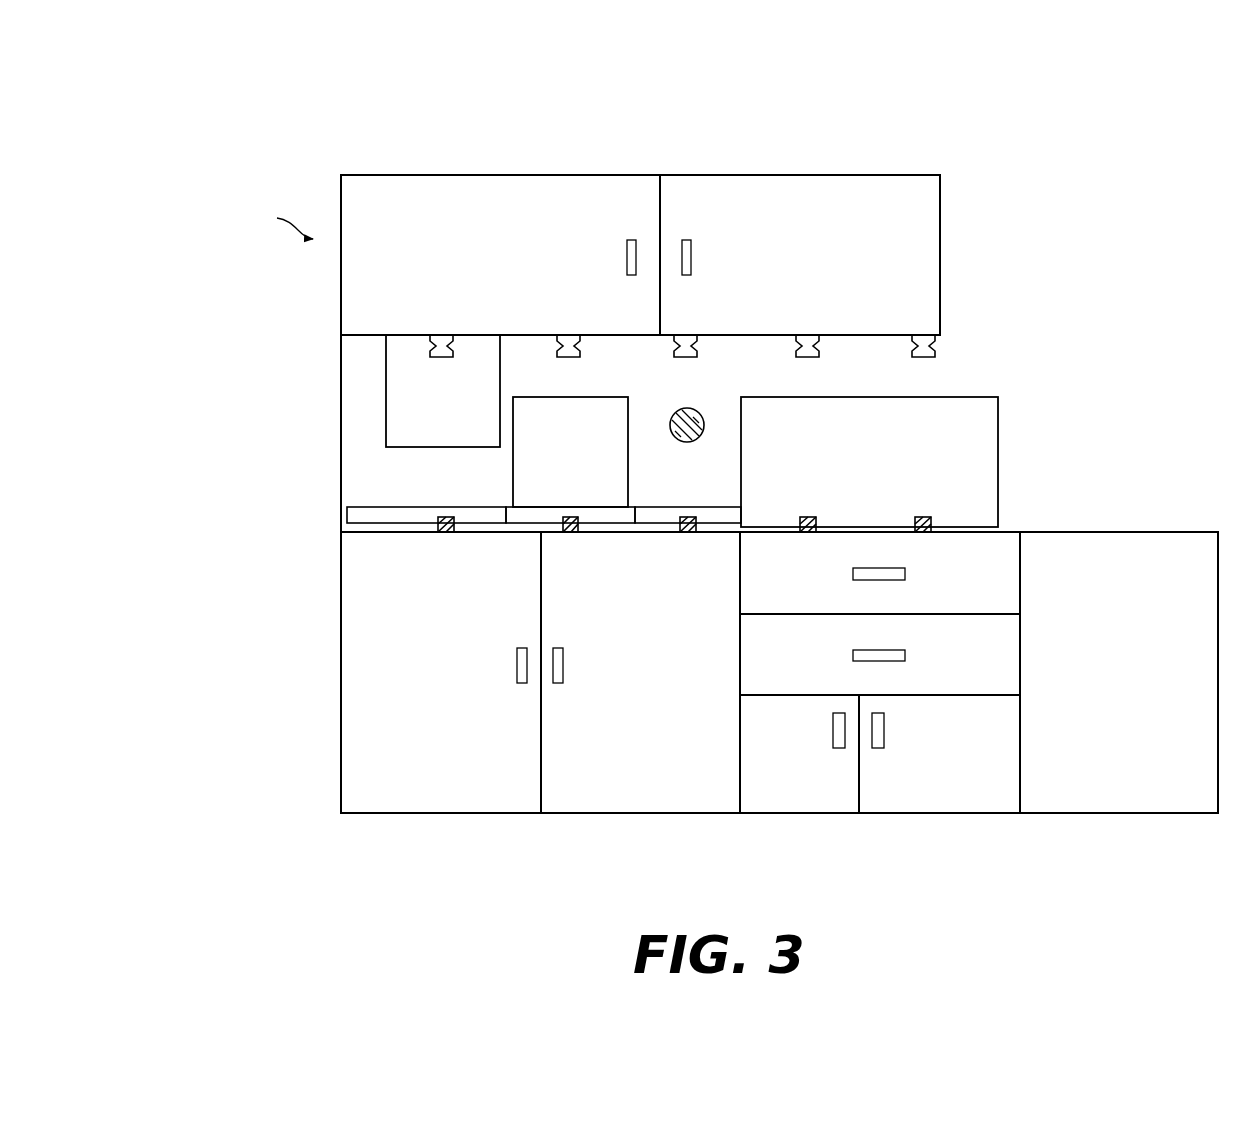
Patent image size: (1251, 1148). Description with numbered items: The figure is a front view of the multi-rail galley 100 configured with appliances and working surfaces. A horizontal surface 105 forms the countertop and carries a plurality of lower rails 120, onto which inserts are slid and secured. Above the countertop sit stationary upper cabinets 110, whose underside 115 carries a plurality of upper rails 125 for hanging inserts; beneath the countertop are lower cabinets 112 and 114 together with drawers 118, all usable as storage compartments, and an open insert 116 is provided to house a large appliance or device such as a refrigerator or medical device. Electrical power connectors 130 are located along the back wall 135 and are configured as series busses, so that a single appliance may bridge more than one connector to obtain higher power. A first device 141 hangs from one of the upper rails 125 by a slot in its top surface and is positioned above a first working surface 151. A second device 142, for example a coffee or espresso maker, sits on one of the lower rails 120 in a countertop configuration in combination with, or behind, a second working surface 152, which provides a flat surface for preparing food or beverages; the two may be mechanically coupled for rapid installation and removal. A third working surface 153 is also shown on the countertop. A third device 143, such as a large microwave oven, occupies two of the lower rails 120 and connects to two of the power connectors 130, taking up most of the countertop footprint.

The multi-rail galley 100 is at (188, 105).
The horizontal surface 105 is at (1090, 522).
The upper cabinets 110 is at (727, 182).
The lower cabinet 112 is at (612, 790).
The lower cabinet 114 is at (927, 790).
The underside 115 is at (357, 342).
The open insert 116 is at (1165, 790).
The drawers 118 is at (1012, 567).
The lower rails 120 is at (686, 533).
The upper rails 125 is at (567, 333).
The electrical power connectors 130 is at (672, 411).
The back wall 135 is at (360, 414).
The first device 141 is at (443, 391).
The second device 142 is at (570, 452).
The third device 143 is at (869, 462).
The first working surface 151 is at (392, 507).
The second working surface 152 is at (508, 507).
The third working surface 153 is at (672, 507).